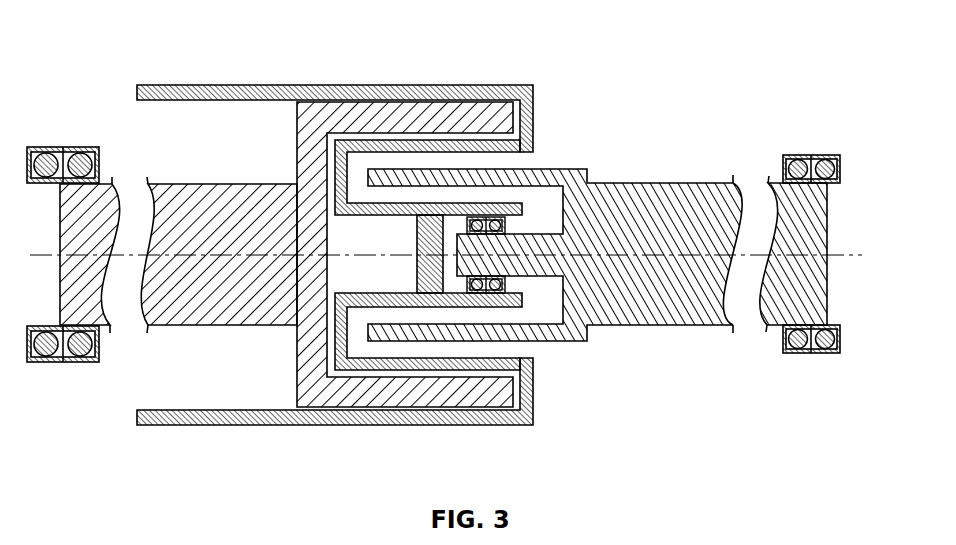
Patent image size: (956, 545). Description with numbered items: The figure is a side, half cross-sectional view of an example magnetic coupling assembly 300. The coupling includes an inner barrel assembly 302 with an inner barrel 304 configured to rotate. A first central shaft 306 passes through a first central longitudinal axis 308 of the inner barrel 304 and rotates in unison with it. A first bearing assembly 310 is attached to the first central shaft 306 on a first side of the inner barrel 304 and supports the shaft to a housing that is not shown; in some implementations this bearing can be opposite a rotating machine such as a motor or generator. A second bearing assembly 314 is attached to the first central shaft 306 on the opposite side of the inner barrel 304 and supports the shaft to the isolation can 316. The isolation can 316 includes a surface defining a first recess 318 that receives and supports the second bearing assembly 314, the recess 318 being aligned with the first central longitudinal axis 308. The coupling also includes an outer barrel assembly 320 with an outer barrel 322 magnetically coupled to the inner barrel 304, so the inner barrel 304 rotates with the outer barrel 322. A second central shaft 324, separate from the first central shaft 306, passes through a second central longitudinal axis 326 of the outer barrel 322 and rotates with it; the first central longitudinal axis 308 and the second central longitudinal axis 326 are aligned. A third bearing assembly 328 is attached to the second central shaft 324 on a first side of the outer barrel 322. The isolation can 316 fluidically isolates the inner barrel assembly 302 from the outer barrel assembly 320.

The magnetic coupling assembly 300 is at (117, 33).
The inner barrel assembly 302 is at (614, 352).
The inner barrel 304 is at (545, 336).
The first central shaft 306 is at (667, 313).
The first central longitudinal axis 308 is at (653, 250).
The first bearing assembly 310 is at (811, 155).
The second bearing assembly 314 is at (483, 292).
The isolation can 316 is at (414, 285).
The first recess 318 is at (458, 225).
The outer barrel assembly 320 is at (255, 372).
The outer barrel 322 is at (327, 397).
The second central shaft 324 is at (192, 313).
The second central longitudinal axis 326 is at (223, 243).
The third bearing assembly 328 is at (63, 147).